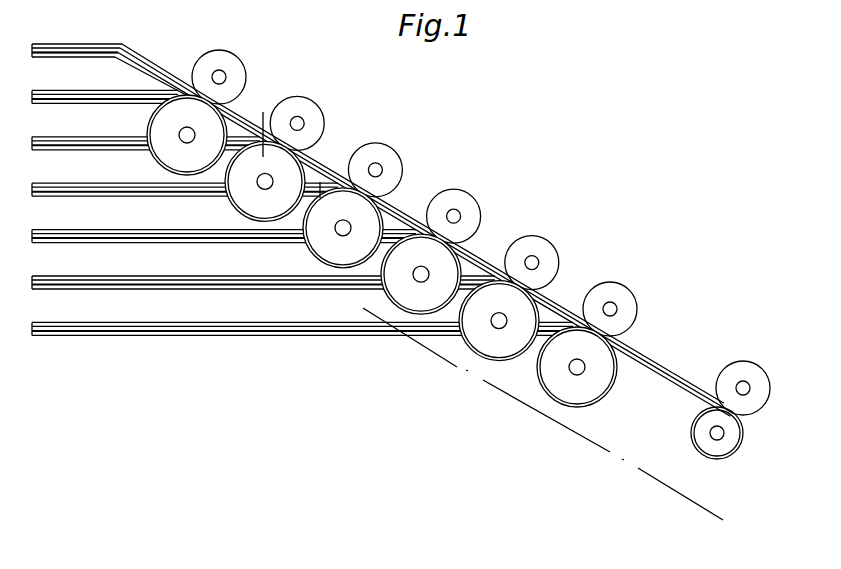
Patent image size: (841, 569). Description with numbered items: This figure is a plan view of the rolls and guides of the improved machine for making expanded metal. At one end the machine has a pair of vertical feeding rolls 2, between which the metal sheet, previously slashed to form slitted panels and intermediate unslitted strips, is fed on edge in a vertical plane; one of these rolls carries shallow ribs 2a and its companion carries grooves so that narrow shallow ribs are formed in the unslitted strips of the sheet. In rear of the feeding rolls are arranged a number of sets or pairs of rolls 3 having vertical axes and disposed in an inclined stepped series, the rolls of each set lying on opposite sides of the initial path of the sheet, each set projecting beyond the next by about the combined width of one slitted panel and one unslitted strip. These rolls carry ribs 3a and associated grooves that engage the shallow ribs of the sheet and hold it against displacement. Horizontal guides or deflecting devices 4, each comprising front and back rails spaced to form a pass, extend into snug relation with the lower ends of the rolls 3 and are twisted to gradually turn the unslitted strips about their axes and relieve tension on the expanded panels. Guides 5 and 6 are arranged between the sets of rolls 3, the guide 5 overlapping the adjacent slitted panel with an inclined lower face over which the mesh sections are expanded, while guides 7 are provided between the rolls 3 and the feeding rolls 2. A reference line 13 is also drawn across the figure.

The feeding rolls 2 is at (737, 429).
The shallow ribs 2a is at (732, 455).
The rolls 3 is at (213, 120).
The ribs 3a is at (538, 382).
The guides 4 is at (80, 52).
The guides 5 is at (142, 67).
The guides 6 is at (152, 64).
The guides 7 is at (672, 372).
The reference line 13 is at (554, 430).